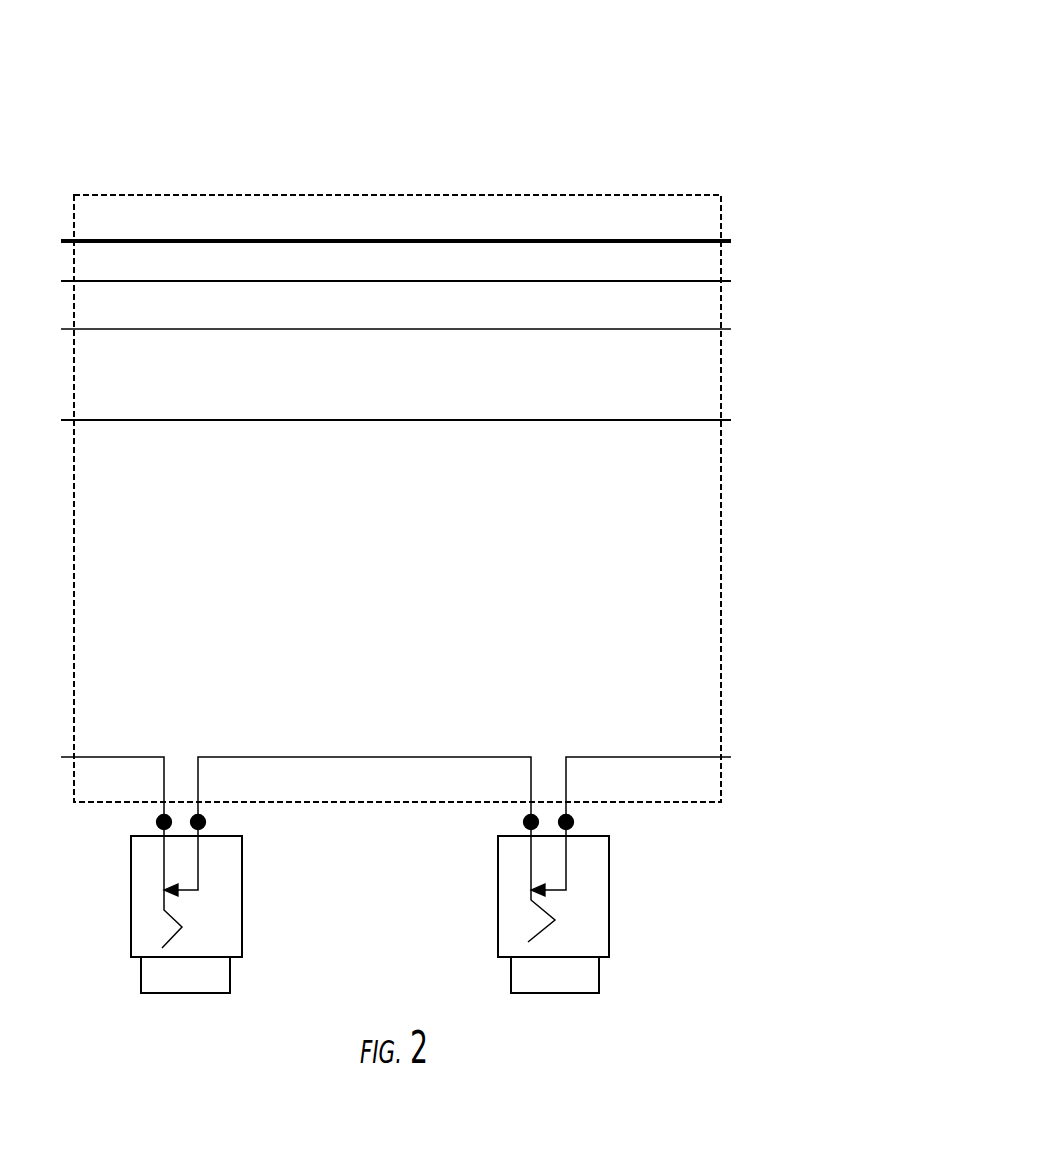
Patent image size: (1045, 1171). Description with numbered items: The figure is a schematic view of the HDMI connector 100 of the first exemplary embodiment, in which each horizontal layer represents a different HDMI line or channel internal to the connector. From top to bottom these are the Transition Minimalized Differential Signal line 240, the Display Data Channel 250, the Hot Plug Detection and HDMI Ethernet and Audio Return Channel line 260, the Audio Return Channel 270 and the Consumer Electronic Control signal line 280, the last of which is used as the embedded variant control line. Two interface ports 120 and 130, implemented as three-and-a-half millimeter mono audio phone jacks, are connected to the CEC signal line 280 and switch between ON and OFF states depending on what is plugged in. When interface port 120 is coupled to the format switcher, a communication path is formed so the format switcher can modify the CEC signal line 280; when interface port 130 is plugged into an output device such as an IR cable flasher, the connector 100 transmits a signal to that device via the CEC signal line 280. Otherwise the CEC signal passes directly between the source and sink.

The HDMI connector 100 is at (758, 138).
The interface port 120 is at (135, 913).
The interface port 130 is at (609, 900).
The Transition Minimalized Differential Signal (TDMS) 240 is at (721, 220).
The Display Data Channel (DDC) 250 is at (721, 264).
The Hot Plug Detection (HDP) and HDMI Ethernet and Audio Return Channel (HEAC) 260 is at (721, 313).
The Audio Return Channel (ARC) 270 is at (721, 382).
The Consumer Electronic Control (CEC) signal line 280 is at (721, 676).